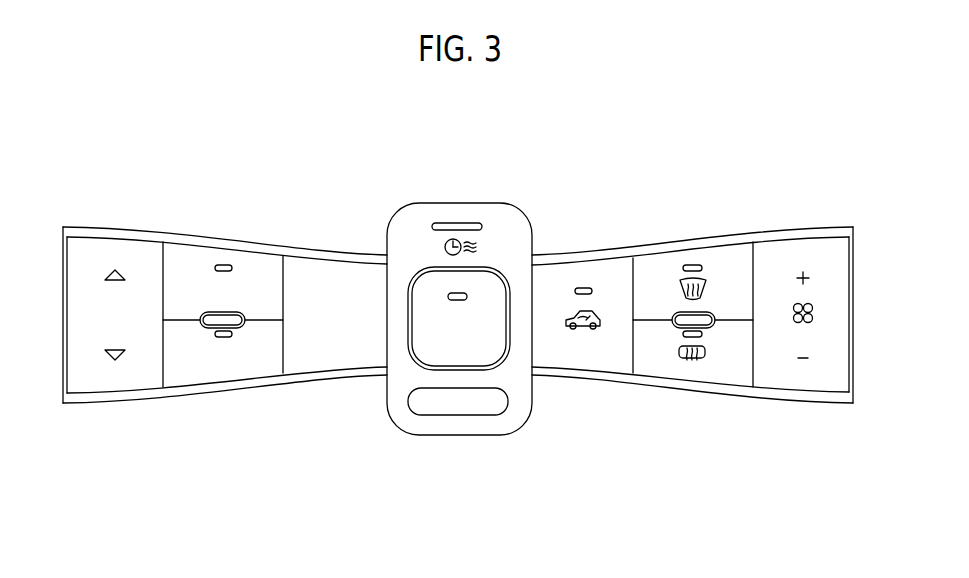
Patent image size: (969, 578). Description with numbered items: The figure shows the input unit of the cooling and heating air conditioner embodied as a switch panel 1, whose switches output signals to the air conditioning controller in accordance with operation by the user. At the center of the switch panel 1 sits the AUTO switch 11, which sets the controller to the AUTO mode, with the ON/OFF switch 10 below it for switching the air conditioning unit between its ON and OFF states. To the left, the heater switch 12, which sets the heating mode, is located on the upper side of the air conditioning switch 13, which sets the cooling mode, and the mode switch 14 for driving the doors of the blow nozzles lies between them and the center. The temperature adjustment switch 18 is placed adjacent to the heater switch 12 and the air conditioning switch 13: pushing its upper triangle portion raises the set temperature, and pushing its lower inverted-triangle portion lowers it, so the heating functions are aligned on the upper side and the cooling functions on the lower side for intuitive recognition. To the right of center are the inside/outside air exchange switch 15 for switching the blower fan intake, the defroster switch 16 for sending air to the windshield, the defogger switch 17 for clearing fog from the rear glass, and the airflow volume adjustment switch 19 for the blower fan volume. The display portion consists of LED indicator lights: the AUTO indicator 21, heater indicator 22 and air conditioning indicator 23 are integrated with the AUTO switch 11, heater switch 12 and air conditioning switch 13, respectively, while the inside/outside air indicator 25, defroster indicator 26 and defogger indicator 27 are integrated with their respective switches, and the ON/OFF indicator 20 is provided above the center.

The switch panel 1 is at (240, 235).
The ON/OFF switch 10 is at (457, 415).
The AUTO switch 11 is at (490, 287).
The heater switch 12 is at (265, 270).
The air conditioning switch 13 is at (263, 353).
The mode switch 14 is at (353, 277).
The inside/outside air exchange switch 15 is at (560, 345).
The defroster switch 16 is at (730, 255).
The defogger switch 17 is at (653, 358).
The temperature adjustment switch 18 is at (92, 260).
The airflow volume adjustment switch 19 is at (832, 252).
The ON/OFF indicator 20 is at (447, 223).
The AUTO indicator 21 is at (465, 293).
The heater indicator 22 is at (223, 260).
The air conditioning indicator 23 is at (213, 340).
The inside/outside air indicator 25 is at (583, 283).
The defroster indicator 26 is at (692, 262).
The defogger indicator 27 is at (702, 333).